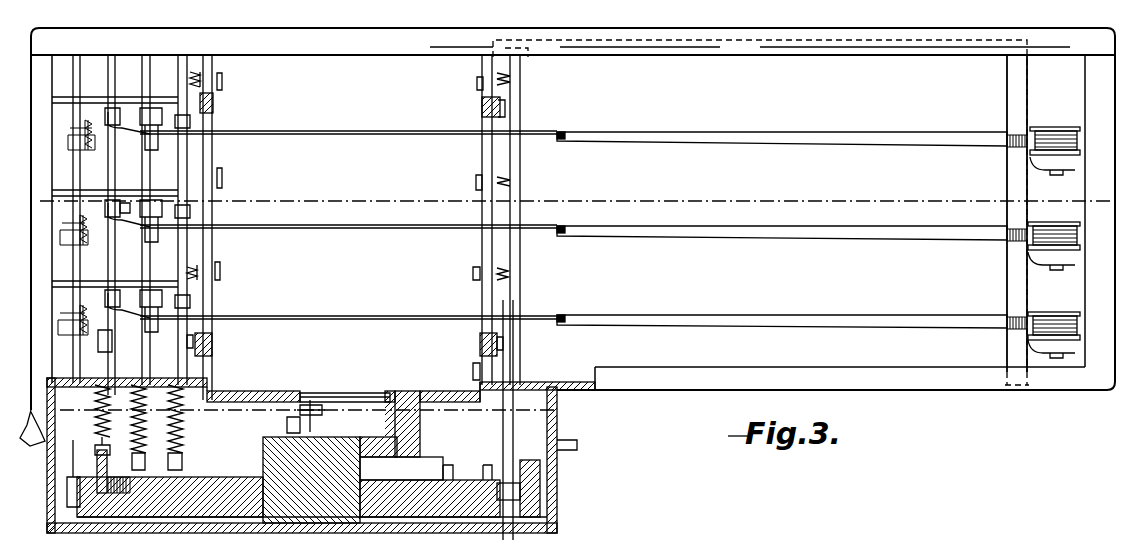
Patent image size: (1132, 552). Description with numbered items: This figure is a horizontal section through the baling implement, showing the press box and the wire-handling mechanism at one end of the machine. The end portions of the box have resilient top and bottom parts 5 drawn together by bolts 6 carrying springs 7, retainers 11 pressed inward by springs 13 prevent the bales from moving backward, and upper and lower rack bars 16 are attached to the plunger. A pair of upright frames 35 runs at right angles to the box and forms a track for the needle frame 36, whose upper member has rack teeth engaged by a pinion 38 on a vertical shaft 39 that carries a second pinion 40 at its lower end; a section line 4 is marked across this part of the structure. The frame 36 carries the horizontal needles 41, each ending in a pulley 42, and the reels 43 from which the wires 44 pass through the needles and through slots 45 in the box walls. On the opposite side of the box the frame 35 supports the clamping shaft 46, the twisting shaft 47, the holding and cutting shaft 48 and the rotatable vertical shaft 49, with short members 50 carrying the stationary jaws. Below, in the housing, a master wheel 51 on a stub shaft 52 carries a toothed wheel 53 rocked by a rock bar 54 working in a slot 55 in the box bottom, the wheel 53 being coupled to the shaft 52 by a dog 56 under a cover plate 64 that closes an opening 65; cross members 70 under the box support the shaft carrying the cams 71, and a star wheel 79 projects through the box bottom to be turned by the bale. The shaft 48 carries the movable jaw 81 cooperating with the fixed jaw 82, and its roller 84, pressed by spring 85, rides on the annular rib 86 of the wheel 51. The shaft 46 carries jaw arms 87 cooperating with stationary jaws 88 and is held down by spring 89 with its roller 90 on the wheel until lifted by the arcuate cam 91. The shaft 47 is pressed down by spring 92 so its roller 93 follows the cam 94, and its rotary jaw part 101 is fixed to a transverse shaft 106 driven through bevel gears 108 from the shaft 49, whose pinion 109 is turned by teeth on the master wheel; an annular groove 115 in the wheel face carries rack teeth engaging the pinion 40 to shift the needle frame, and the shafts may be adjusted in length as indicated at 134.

The section line 4- 4 is at (438, 64).
The top and bottom parts 5 is at (757, 69).
The bolts 6 is at (1, 206).
The springs 7 is at (18, 410).
The retainers 11 is at (222, 175).
The springs 13 is at (515, 183).
The rack bars 16 is at (213, 341).
The upright frames 35 is at (1093, 88).
The needle frame 36 is at (1017, 106).
The pinion 38 is at (533, 57).
The shaft 39 is at (517, 278).
The pinion 40 is at (518, 463).
The needles 41 is at (846, 129).
The pulley 42 is at (557, 313).
The reels 43 is at (1055, 121).
The wires 44 is at (362, 135).
The slots 45 is at (210, 246).
The shaft 46 is at (183, 155).
The shaft 47 is at (148, 63).
The shaft 48 is at (109, 63).
The vertical shaft 49 is at (77, 263).
The longitudinally extending members 50 is at (60, 285).
The master wheel 51 is at (193, 486).
The stub shaft 52 is at (277, 465).
The toothed wheel 53 is at (377, 458).
The rock bar 54 is at (412, 396).
The slot 55 is at (392, 384).
The dogs 56 is at (356, 437).
The cover plate 64 is at (357, 393).
The opening 65 is at (248, 405).
The supporting cross members 70 is at (263, 423).
The cams 71 is at (300, 423).
The star wheel 79 is at (222, 378).
The jaw 81 is at (333, 423).
The jaw 82 is at (115, 108).
The roller 84 is at (95, 446).
The spring 85 is at (92, 420).
The annular flange 86 is at (95, 464).
The jaw forming arms 87 is at (173, 239).
The stationary jaw member 88 is at (190, 122).
The spring 89 is at (174, 432).
The roller 90 is at (178, 460).
The arcuate cam 91 is at (448, 462).
The spring 92 is at (139, 432).
The roller 93 is at (110, 471).
The cam 94 is at (488, 462).
The semi-circular jaw part 101 is at (153, 115).
The shaft 106 is at (128, 231).
The bevel gears 108 is at (68, 139).
The pinion 109 is at (66, 507).
The annular groove 115 is at (128, 496).
The length adjustment 134 is at (172, 366).